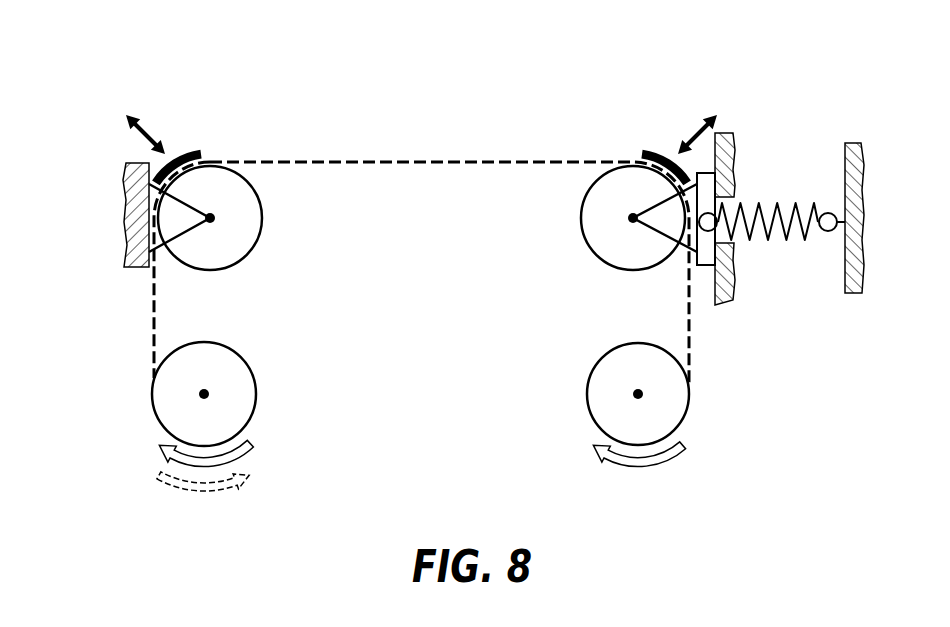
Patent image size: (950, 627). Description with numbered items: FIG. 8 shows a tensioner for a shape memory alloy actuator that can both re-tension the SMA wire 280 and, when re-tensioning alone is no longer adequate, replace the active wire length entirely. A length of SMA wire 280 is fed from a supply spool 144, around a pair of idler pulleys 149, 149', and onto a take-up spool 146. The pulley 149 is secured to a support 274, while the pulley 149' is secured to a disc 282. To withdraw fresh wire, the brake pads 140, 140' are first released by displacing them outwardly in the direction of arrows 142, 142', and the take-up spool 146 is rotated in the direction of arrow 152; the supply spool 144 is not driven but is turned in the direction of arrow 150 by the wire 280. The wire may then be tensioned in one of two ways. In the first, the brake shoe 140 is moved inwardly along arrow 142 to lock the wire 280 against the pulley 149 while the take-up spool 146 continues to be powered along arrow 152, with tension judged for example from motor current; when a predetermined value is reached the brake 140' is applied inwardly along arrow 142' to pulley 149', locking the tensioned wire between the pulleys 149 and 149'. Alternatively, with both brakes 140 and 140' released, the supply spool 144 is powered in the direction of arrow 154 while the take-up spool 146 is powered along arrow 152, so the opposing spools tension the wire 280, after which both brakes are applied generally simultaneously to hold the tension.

The brake pad 140 is at (224, 145).
The brake pad 140' is at (615, 144).
The arrow 142 is at (181, 109).
The arrow 142' is at (662, 109).
The supply spool 144 is at (167, 398).
The take-up spool 146 is at (600, 397).
The idler pulley 149 is at (251, 220).
The idler pulley 149' is at (600, 220).
The arrow 150 is at (245, 470).
The arrow 152 is at (645, 470).
The arrow 154 is at (210, 500).
The support 274 is at (148, 225).
The SMA wire 280 is at (381, 162).
The disc 282 is at (703, 265).